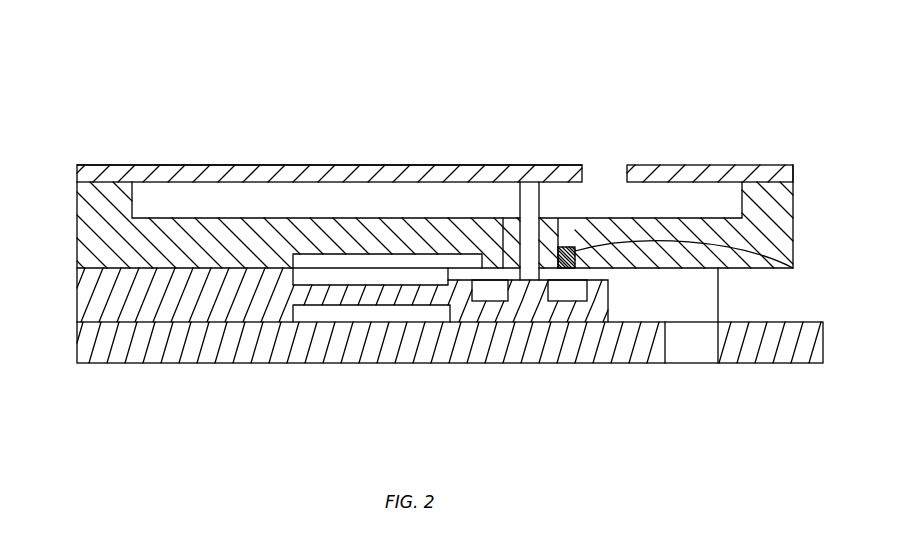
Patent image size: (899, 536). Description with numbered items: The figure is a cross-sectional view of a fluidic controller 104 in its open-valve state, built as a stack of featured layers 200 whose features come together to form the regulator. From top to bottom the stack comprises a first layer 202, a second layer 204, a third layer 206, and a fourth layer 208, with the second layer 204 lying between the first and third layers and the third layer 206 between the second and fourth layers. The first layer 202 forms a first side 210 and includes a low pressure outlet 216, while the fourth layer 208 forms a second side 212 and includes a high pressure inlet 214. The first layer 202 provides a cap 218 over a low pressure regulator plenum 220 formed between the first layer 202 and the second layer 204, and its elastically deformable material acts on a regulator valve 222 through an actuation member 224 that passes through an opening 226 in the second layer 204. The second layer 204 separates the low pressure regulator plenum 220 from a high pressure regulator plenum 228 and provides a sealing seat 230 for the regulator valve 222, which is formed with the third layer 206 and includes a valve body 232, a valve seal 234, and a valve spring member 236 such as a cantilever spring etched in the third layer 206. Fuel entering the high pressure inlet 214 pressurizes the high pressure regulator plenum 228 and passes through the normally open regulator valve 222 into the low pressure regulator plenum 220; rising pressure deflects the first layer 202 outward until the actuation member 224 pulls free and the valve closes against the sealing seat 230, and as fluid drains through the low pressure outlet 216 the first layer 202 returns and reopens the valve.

The fluidic controller 104 is at (92, 61).
The featured layers 200 is at (62, 167).
The first layer 202 is at (93, 164).
The second layer 204 is at (110, 220).
The third layer 206 is at (100, 303).
The fourth layer 208 is at (248, 358).
The first side 210 is at (189, 166).
The second side 212 is at (170, 365).
The high pressure inlet 214 is at (688, 353).
The low pressure outlet 216 is at (608, 163).
The cap 218 is at (323, 170).
The low pressure regulator plenum 220 is at (367, 195).
The regulator valve 222 is at (567, 272).
The actuation member 224 is at (552, 215).
The opening 226 is at (505, 242).
The high pressure regulator plenum 228 is at (365, 317).
The sealing seat 230 is at (793, 268).
The valve body 232 is at (523, 310).
The valve seal 234 is at (493, 302).
The valve spring member 236 is at (408, 293).